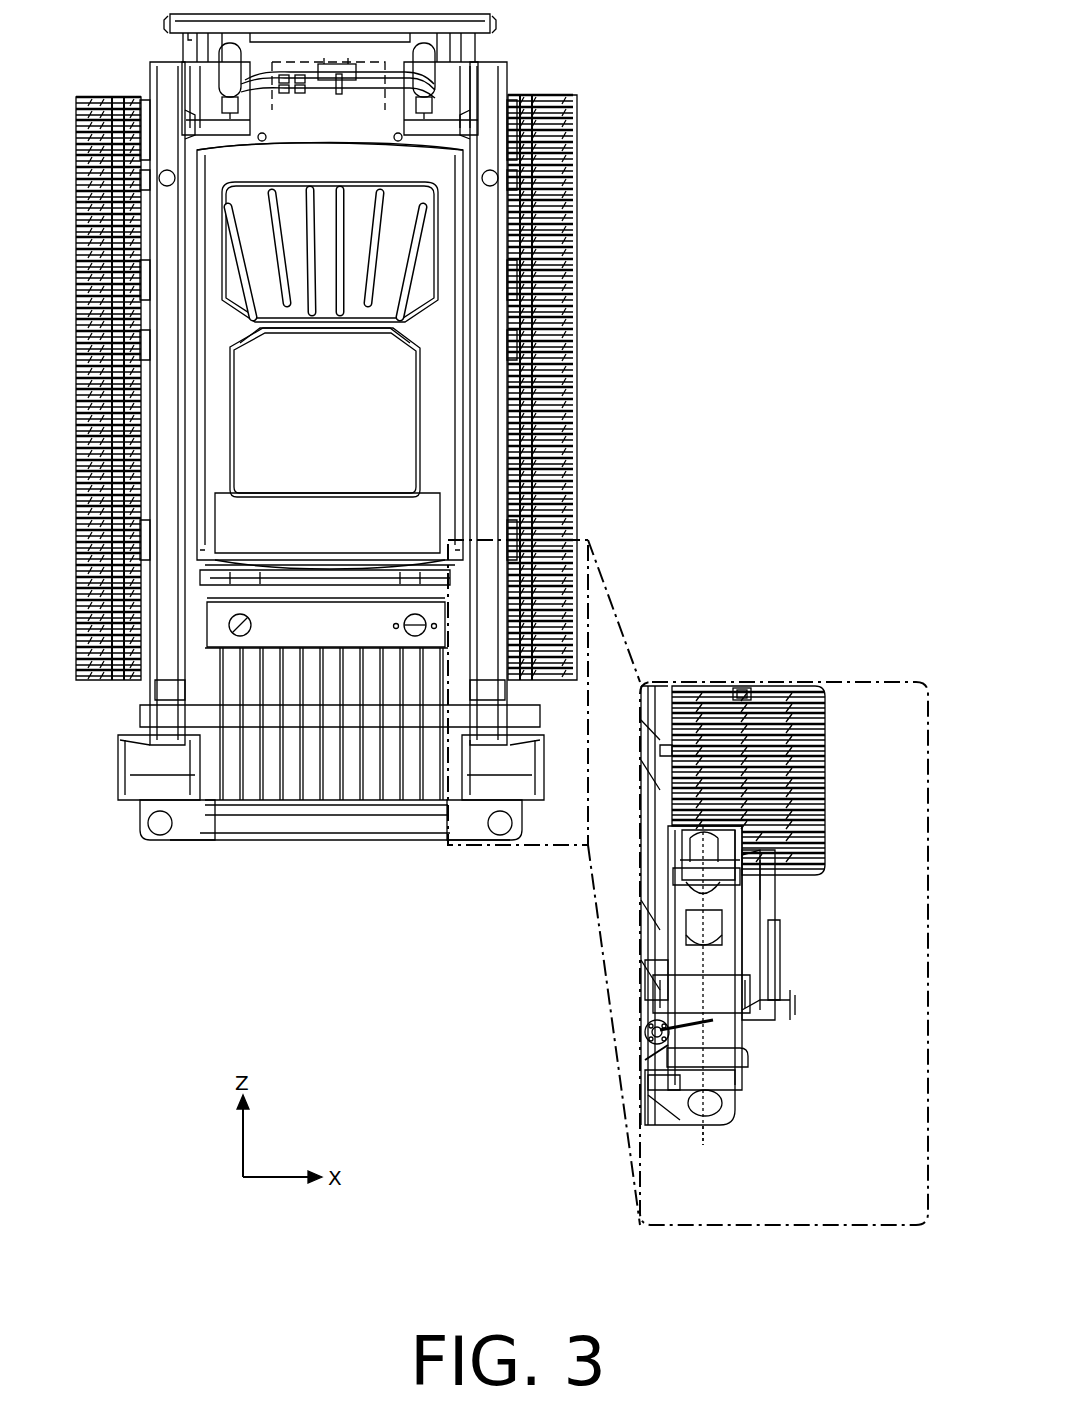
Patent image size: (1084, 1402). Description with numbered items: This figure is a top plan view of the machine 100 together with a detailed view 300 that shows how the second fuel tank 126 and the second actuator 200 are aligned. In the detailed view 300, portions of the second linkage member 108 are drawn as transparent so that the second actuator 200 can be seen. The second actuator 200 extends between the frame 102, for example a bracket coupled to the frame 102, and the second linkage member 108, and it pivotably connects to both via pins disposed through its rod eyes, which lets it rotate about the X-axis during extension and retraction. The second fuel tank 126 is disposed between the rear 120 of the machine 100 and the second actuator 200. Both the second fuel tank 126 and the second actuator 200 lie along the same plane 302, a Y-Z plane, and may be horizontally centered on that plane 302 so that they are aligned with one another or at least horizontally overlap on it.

The machine 100 is at (380, 619).
The second linkage member 108 is at (507, 288).
The detailed view 300 is at (805, 669).
The second actuator 200 is at (728, 832).
The rear of the machine 120 is at (779, 949).
The second fuel tank 126 is at (748, 1040).
The frame 102 is at (724, 1080).
The plane 302 is at (751, 1149).